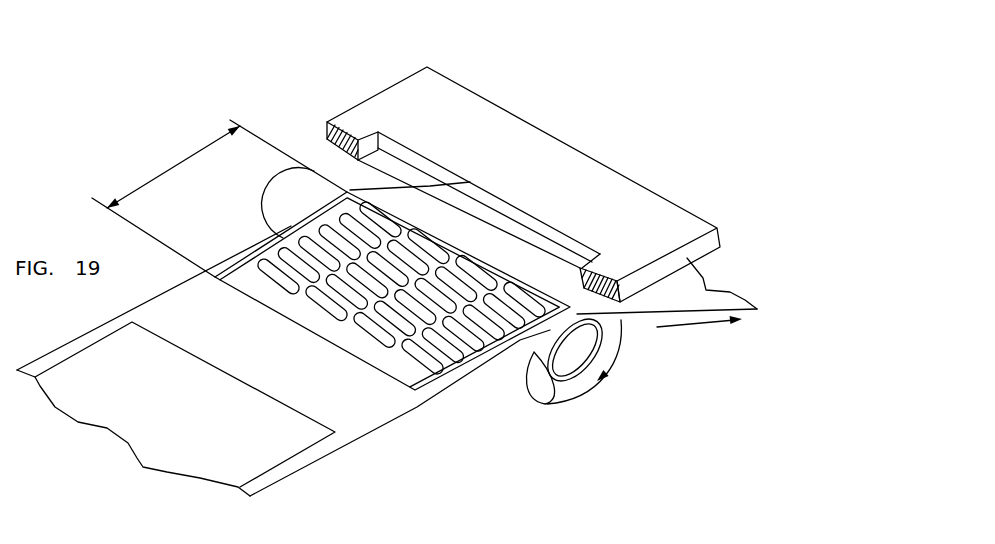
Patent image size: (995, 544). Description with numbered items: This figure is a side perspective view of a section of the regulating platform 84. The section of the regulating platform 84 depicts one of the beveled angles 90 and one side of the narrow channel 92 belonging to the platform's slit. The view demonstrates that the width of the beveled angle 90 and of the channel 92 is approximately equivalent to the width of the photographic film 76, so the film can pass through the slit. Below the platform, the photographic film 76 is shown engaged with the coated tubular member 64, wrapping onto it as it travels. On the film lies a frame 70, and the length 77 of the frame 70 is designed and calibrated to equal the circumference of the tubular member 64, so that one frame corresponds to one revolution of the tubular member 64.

The coated tubular member 64 is at (540, 403).
The frame 70 is at (258, 248).
The photographic film 76 is at (392, 410).
The length of frame 77 is at (219, 198).
The regulating platform 84 is at (388, 102).
The beveled angle 90 is at (435, 170).
The narrow channel 92 is at (471, 200).